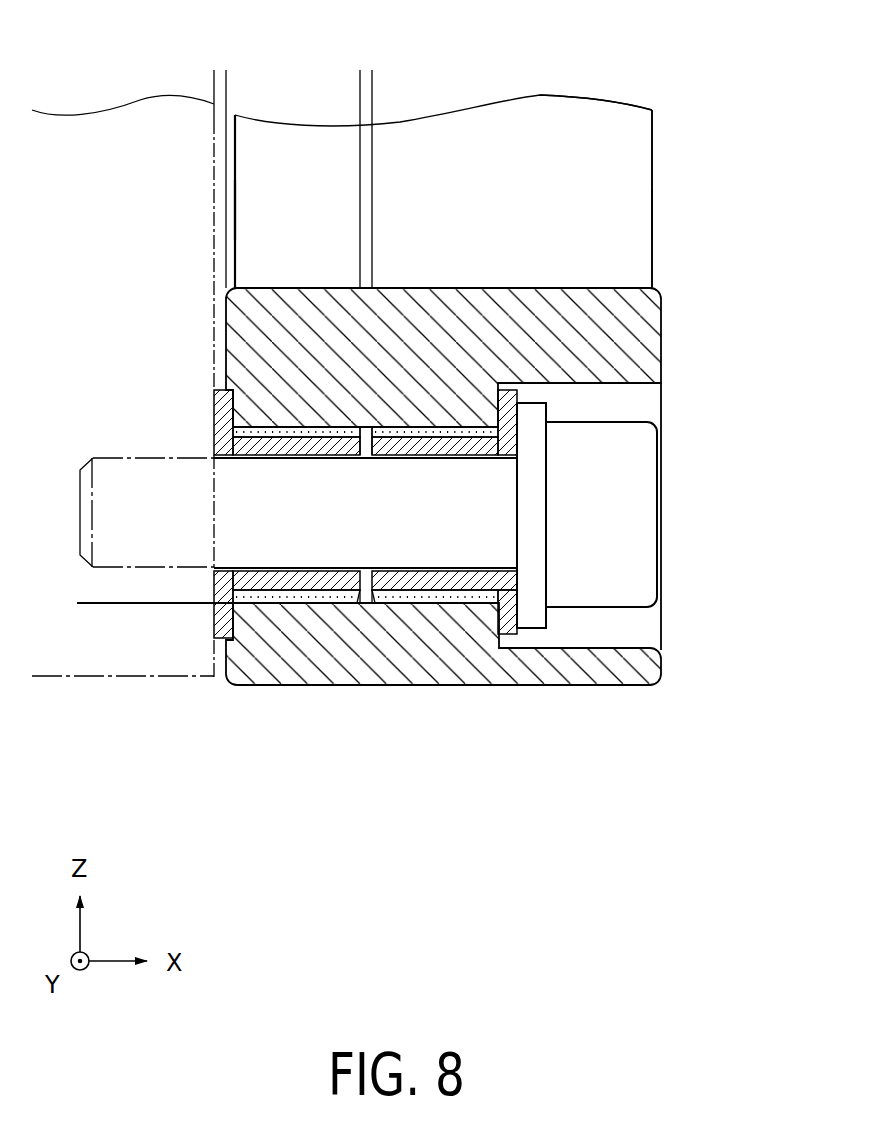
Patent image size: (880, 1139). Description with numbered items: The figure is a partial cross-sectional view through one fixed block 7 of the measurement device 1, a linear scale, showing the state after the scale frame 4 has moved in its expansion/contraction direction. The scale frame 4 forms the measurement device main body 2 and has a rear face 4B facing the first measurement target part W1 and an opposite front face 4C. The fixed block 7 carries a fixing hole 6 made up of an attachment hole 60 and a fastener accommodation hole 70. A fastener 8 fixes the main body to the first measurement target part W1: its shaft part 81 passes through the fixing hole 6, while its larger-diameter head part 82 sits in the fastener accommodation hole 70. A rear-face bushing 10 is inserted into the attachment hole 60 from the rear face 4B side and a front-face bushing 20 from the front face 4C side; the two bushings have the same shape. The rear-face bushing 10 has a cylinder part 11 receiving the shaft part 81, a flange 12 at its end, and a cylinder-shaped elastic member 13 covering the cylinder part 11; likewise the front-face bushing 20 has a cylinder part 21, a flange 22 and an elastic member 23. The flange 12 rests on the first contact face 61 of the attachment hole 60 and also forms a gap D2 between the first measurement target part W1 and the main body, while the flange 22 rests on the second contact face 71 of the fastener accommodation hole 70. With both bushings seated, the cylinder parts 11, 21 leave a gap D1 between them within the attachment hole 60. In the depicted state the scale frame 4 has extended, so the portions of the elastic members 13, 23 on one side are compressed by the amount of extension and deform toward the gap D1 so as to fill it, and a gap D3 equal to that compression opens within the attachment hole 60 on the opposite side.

The measurement device 1 is at (702, 60).
The measurement device main body 2 is at (647, 82).
The scale frame 4 is at (656, 181).
The rear face 4B is at (233, 208).
The front face 4C is at (656, 213).
The fixing hole 6 is at (677, 641).
The fixed block 7 is at (657, 328).
The fastener 8 is at (677, 551).
The rear-face bushing 10 is at (203, 389).
The cylinder part 11 is at (282, 568).
The flange 12 is at (213, 418).
The elastic member 13 is at (312, 427).
The front-face bushing 20 is at (530, 390).
The cylinder part 21 is at (417, 570).
The flange 22 is at (519, 396).
The elastic member 23 is at (443, 427).
The attachment hole 60 is at (367, 606).
The first contact face 61 is at (215, 630).
The fastener accommodation hole 70 is at (563, 650).
The second contact face 71 is at (503, 636).
The shaft part 81 is at (104, 458).
The head part 82 is at (656, 502).
The gap D1 is at (402, 70).
The gap D2 is at (256, 70).
The gap D3 is at (113, 575).
The first measurement target part W1 is at (156, 680).